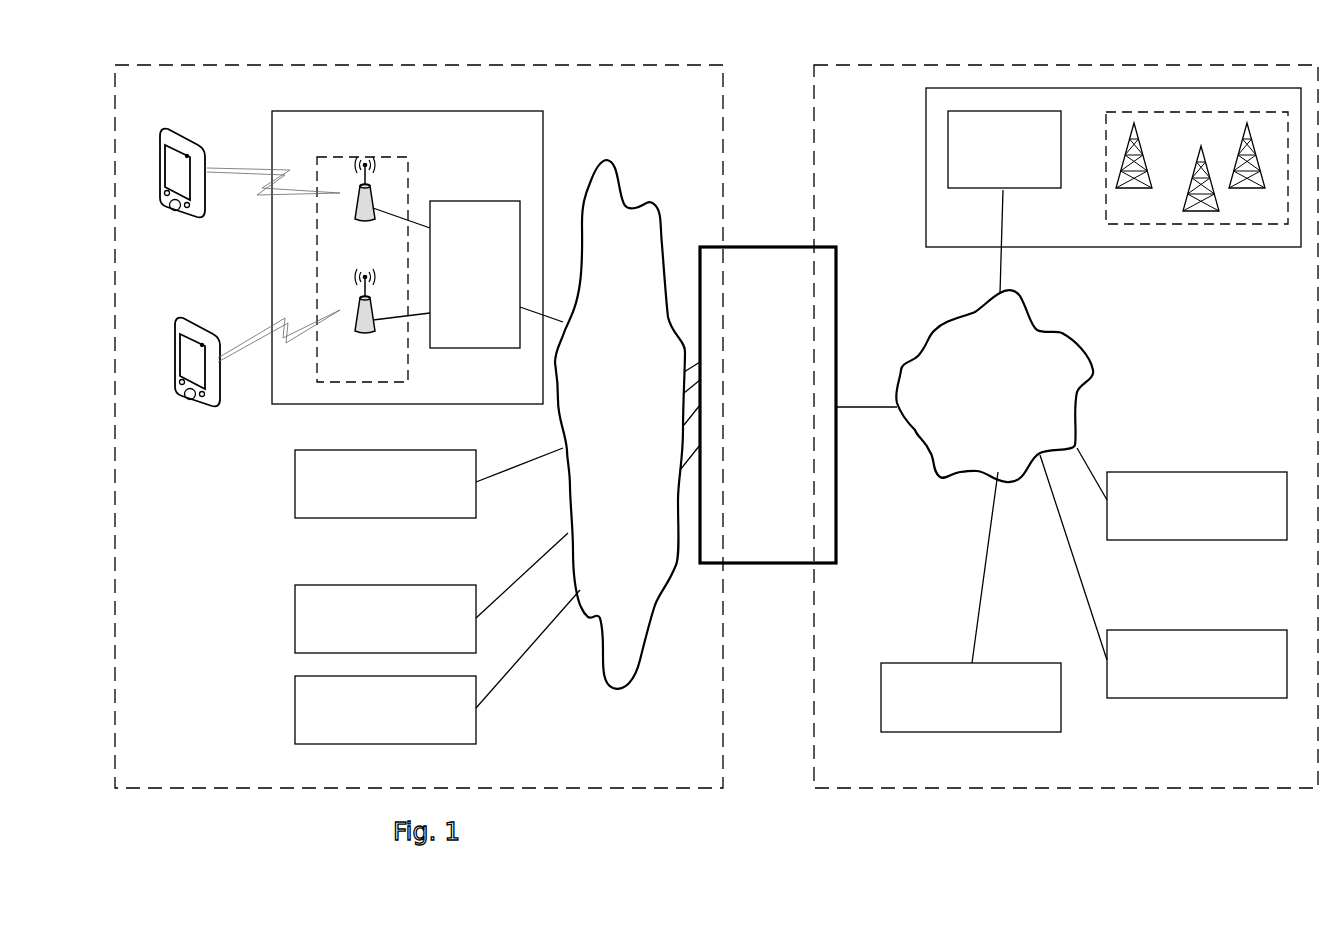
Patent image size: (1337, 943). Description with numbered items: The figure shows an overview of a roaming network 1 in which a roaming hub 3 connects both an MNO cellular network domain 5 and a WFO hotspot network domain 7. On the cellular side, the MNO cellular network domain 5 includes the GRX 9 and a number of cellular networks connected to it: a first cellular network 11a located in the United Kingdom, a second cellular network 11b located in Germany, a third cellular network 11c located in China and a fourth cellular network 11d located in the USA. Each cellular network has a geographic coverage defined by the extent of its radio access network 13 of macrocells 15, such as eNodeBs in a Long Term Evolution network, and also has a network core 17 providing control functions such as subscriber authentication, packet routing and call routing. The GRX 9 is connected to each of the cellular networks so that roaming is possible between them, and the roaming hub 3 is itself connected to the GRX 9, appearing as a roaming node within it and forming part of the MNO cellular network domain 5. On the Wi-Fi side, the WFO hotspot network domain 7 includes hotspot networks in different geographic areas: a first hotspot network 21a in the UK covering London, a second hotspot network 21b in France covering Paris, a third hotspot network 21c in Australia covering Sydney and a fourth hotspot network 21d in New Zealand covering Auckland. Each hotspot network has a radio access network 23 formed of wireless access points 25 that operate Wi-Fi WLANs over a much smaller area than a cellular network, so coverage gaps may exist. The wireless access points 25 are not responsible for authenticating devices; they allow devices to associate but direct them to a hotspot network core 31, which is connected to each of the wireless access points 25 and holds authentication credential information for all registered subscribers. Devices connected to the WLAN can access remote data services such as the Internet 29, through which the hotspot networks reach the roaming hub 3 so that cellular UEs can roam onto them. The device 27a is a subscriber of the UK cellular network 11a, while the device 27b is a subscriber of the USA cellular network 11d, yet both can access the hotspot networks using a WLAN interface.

The roaming network 1 is at (770, 52).
The roaming hub 3 is at (758, 247).
The MNO cellular network domain 5 is at (1062, 65).
The WFO hotspot network domain 7 is at (356, 65).
The GRX 9 is at (935, 480).
The first cellular network 11a is at (926, 137).
The second cellular network 11b is at (1257, 472).
The third cellular network 11c is at (1257, 630).
The fourth cellular network 11d is at (1014, 663).
The radio access network 13 is at (1106, 212).
The macrocells 15 is at (1142, 132).
The network core 17 is at (1004, 190).
The first hotspot network 21a is at (543, 145).
The second hotspot network 21b is at (295, 483).
The third hotspot network 21c is at (295, 618).
The fourth hotspot network 21d is at (295, 708).
The radio access network 23 is at (317, 268).
The wireless access points 25 is at (360, 227).
The device 27a is at (186, 138).
The device 27b is at (186, 325).
The Internet 29 is at (650, 205).
The hotspot network core 31 is at (485, 201).